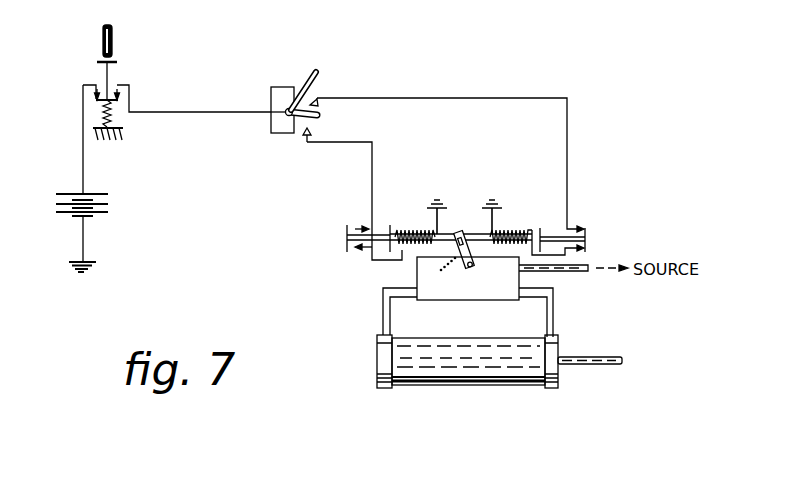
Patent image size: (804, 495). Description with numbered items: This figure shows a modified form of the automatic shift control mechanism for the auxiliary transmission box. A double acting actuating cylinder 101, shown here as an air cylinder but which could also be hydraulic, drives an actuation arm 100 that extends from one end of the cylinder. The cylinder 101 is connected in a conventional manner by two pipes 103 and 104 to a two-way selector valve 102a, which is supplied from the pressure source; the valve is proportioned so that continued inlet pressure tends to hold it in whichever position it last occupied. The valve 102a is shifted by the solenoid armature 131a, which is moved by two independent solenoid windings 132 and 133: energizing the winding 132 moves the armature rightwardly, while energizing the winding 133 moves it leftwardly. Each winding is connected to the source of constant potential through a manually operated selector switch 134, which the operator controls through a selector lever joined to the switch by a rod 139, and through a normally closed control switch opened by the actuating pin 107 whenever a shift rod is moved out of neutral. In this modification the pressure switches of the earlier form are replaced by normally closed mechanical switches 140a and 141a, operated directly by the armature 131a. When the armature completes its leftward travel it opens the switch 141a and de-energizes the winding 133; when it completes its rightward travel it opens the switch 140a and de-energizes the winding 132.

The actuation arm 100 is at (597, 365).
The double acting actuating cylinder 101 is at (458, 376).
The valve 102a is at (440, 290).
The pipe 103 is at (383, 317).
The pipe 104 is at (552, 311).
The actuating pin 107 is at (112, 43).
The solenoid armature 131a is at (475, 235).
The solenoid winding 132 is at (518, 221).
The solenoid winding 133 is at (409, 220).
The selector switch 134 is at (281, 80).
The rod 139 is at (312, 80).
The normally closed mechanical switch 140a is at (582, 228).
The normally closed mechanical switch 141a is at (353, 224).